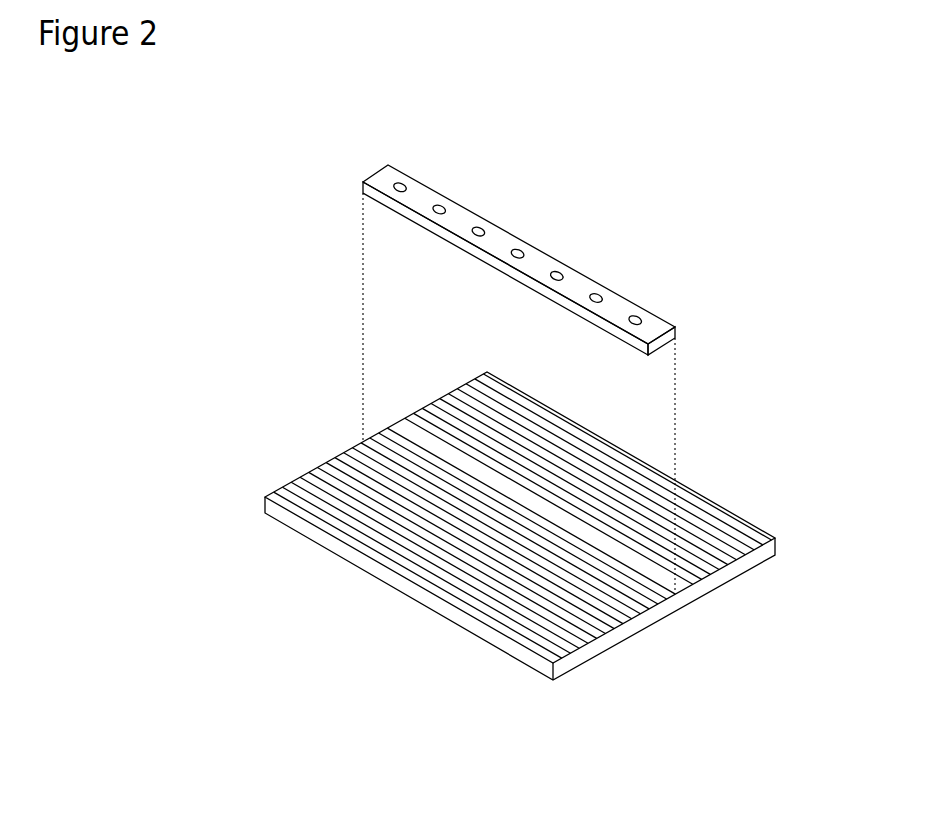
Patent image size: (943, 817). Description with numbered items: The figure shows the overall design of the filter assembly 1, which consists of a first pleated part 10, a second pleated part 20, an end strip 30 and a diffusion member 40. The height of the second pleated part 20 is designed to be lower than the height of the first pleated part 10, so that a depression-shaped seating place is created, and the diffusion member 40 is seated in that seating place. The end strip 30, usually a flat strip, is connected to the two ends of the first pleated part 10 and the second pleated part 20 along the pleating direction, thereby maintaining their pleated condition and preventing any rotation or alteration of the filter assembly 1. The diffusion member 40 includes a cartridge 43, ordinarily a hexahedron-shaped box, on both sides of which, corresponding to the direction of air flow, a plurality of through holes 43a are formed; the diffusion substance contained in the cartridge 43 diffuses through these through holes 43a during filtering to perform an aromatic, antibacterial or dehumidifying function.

The filter assembly 1 is at (521, 115).
The first pleated part 10 is at (491, 546).
The second pleated part 20 is at (392, 427).
The end strip 30 is at (263, 505).
The diffusion member 40 is at (519, 378).
The cartridge 43 is at (519, 260).
The through holes 43a is at (490, 230).